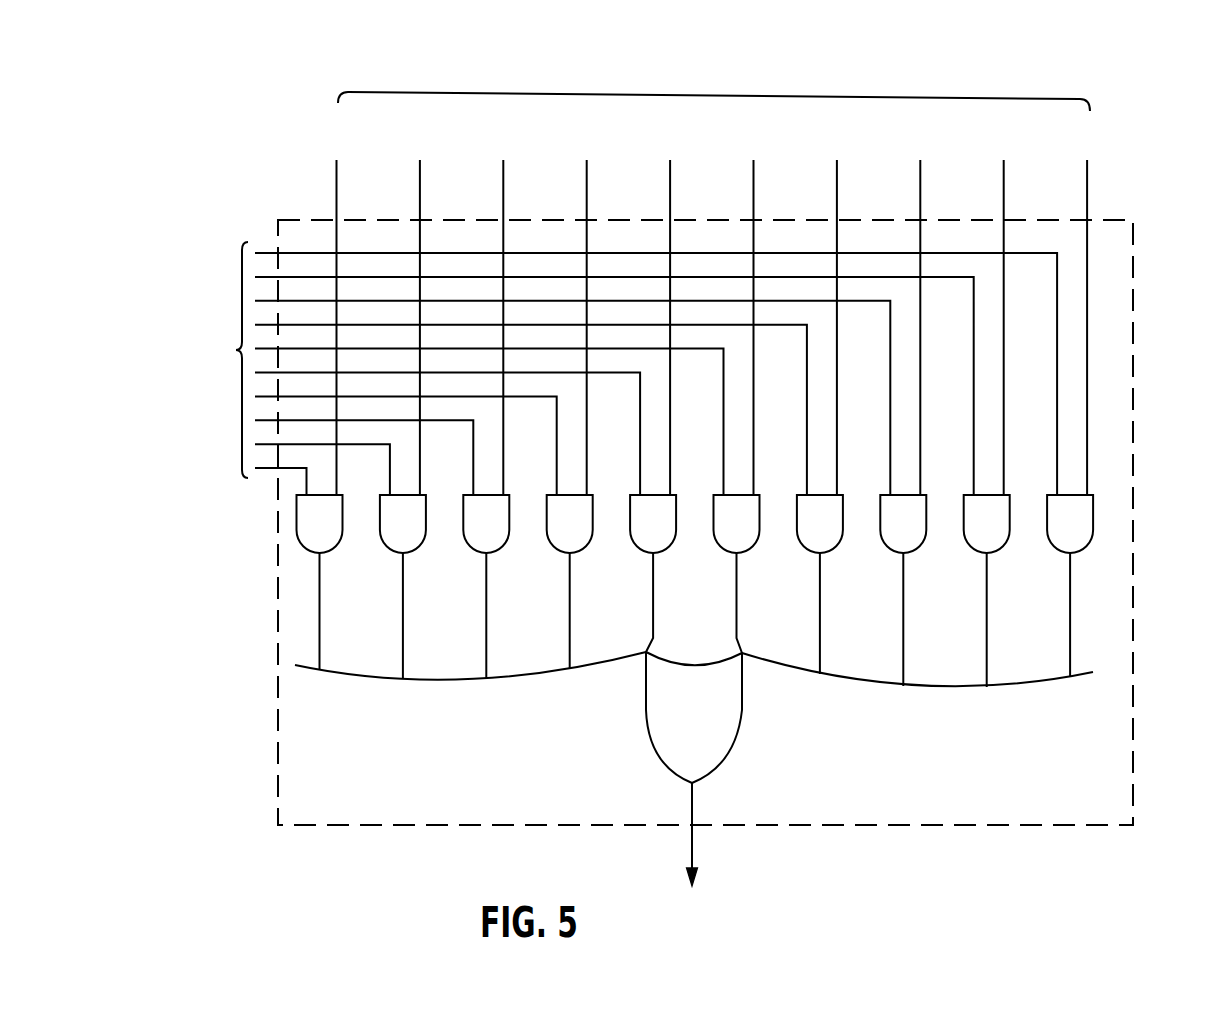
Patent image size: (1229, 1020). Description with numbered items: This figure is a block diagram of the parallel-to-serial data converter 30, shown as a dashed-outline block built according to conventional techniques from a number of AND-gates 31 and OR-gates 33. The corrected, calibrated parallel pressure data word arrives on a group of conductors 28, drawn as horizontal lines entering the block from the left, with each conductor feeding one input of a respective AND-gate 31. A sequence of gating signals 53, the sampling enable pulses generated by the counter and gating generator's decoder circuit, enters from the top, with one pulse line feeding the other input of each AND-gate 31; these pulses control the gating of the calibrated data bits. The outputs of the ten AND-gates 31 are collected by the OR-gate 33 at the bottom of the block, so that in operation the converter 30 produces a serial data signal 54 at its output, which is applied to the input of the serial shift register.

The gating signals 53 is at (867, 94).
The conductors 28 is at (243, 378).
The parallel-to-serial data converter 30 is at (1134, 468).
The AND-gates 31 is at (587, 545).
The OR-gates 33 is at (740, 723).
The serial data signal 54 is at (692, 848).